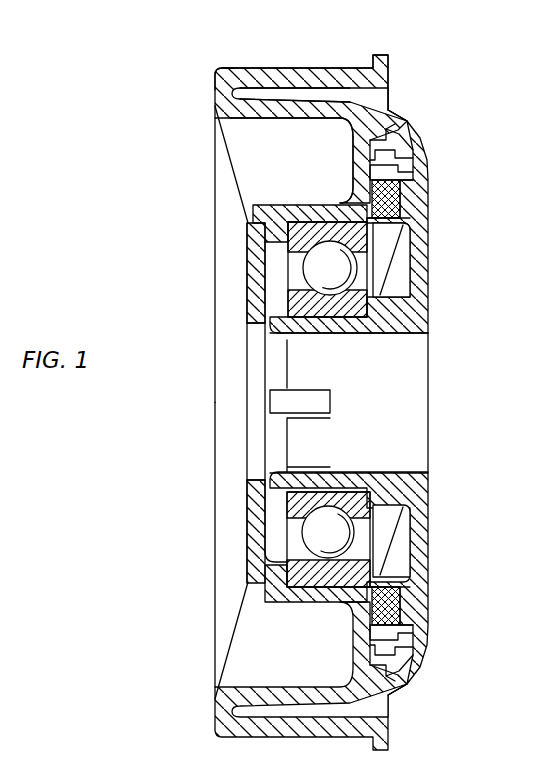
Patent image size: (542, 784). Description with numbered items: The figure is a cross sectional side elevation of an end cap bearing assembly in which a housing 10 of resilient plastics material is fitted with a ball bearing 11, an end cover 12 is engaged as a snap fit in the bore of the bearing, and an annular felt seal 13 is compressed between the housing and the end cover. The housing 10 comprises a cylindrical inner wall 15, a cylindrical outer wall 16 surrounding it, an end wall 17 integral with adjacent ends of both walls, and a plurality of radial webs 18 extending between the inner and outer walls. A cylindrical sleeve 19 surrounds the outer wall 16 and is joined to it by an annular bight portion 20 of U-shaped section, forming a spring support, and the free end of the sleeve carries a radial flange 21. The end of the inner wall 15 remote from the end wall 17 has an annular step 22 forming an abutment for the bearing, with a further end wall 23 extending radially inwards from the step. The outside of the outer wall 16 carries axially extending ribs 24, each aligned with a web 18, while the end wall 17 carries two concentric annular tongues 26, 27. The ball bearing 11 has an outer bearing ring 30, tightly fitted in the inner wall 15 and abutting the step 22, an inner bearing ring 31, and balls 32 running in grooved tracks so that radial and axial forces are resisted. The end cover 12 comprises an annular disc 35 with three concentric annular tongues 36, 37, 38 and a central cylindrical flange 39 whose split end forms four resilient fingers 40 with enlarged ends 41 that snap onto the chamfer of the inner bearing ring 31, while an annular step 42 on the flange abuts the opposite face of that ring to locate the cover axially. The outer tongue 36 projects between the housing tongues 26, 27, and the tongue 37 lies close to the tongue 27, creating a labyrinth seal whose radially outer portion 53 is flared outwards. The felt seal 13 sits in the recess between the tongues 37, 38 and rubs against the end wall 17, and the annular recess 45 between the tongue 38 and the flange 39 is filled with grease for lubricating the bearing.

The housing 10 is at (215, 618).
The ball bearing 11 is at (245, 318).
The end cover 12 is at (430, 275).
The annular felt seal 13 is at (402, 198).
The cylindrical inner wall 15 is at (287, 203).
The cylindrical outer wall 16 is at (252, 118).
The end wall 17 is at (357, 163).
The radial webs 18 is at (210, 207).
The cylindrical sleeve 19 is at (255, 68).
The annular bight portion 20 is at (215, 90).
The radial flange 21 is at (390, 63).
The annular step 22 is at (252, 243).
The further end wall 23 is at (255, 278).
The axially extending ribs 24 is at (295, 92).
The annular tongue 26 is at (392, 110).
The annular tongue 27 is at (393, 150).
The outer bearing ring 30 is at (320, 256).
The inner bearing ring 31 is at (378, 300).
The balls 32 is at (342, 325).
The annular disc 35 is at (420, 527).
The annular tongue 36 is at (408, 130).
The annular tongue 37 is at (397, 170).
The annular tongue 38 is at (405, 220).
The cylindrical flange 39 is at (357, 478).
The resilient fingers 40 is at (302, 340).
The enlarged ends 41 is at (240, 332).
The annular step 42 is at (420, 483).
The annular recess 45 is at (403, 538).
The radially outer portion of passageway 53 is at (350, 130).